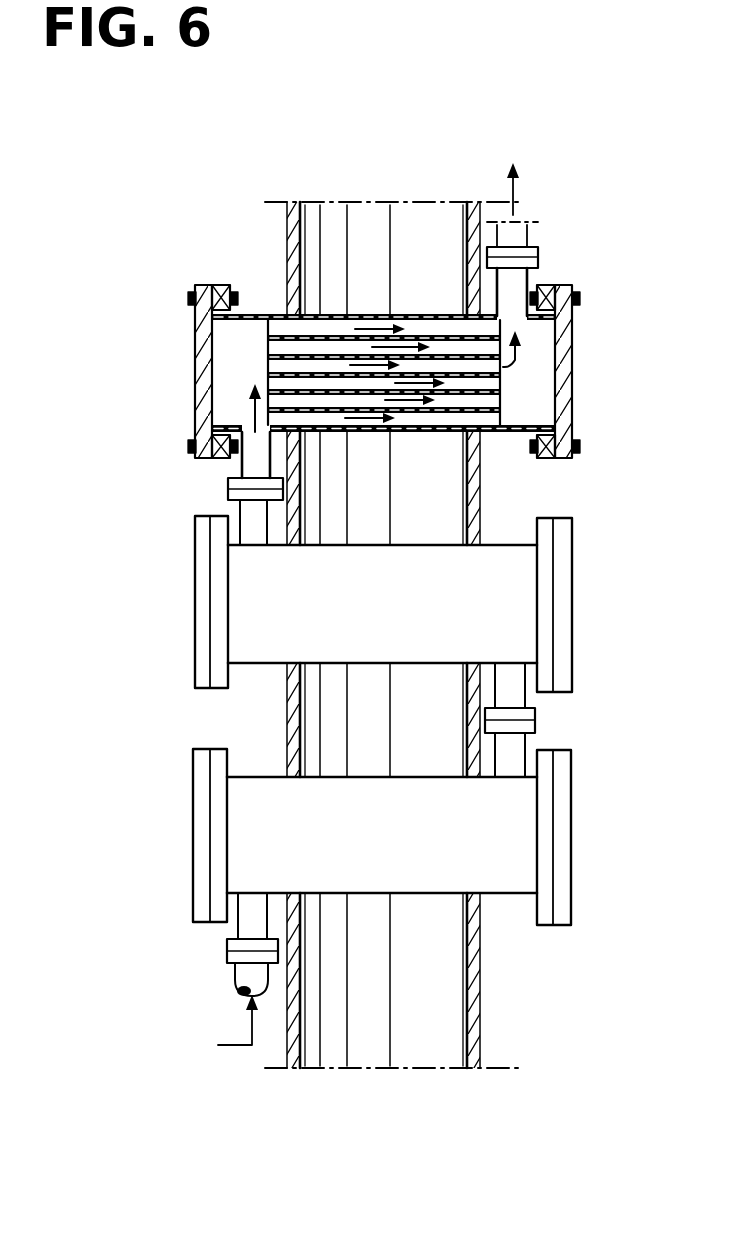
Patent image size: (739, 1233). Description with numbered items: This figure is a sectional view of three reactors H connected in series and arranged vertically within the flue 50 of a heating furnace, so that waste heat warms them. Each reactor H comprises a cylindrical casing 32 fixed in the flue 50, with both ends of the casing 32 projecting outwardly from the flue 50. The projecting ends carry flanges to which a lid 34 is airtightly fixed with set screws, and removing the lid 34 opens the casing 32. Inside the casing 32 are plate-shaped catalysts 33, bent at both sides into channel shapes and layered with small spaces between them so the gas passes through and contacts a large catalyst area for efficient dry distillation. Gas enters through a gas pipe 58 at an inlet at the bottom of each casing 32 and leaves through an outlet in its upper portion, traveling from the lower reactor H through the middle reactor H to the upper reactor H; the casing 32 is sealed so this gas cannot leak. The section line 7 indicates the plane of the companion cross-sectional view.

The section line 7- 7 is at (453, 290).
The cylindrical casing 32 is at (262, 313).
The plate-shaped catalysts 33 is at (270, 357).
The lid 34 is at (198, 336).
The flue 50 is at (478, 1005).
The gas pipe 58 is at (522, 241).
The reactor H is at (594, 428).